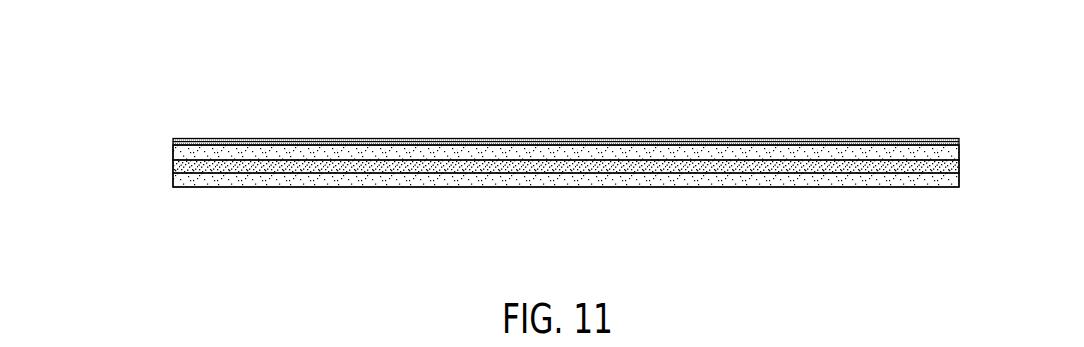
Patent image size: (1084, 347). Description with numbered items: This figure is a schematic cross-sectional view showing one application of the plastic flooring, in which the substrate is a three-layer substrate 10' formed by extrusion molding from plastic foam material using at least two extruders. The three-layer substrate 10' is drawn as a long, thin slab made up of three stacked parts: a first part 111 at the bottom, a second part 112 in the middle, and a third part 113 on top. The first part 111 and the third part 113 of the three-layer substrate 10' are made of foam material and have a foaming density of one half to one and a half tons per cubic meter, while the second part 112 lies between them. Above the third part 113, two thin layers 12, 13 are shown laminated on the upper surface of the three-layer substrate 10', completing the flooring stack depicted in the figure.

The multiple-layer substrate 10' is at (500, 168).
The first thin layer 12 is at (172, 141).
The second thin layer 13 is at (262, 142).
The third part 113 is at (178, 152).
The second part 112 is at (178, 166).
The first part 111 is at (178, 180).